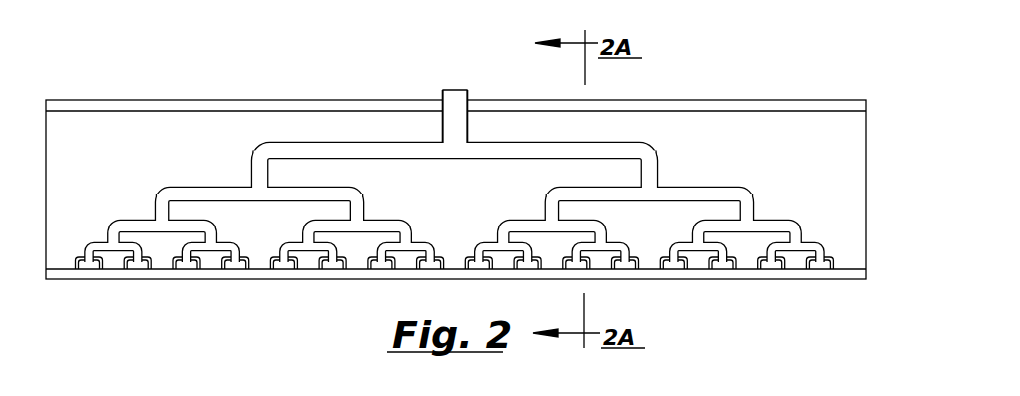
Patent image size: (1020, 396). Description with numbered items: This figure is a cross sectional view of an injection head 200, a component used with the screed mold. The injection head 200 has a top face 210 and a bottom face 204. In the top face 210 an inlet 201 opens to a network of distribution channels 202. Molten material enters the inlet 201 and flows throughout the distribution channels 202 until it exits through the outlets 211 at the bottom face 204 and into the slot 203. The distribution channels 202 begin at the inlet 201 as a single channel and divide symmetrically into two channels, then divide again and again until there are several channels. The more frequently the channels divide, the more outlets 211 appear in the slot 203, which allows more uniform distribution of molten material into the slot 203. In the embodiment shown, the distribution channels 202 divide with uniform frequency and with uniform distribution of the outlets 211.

The injection head 200 is at (456, 176).
The inlet 201 is at (426, 98).
The distribution channels 202 is at (698, 192).
The slot 203 is at (387, 270).
The bottom face 204 is at (233, 277).
The top face 210 is at (155, 100).
The outlets 211 is at (833, 270).